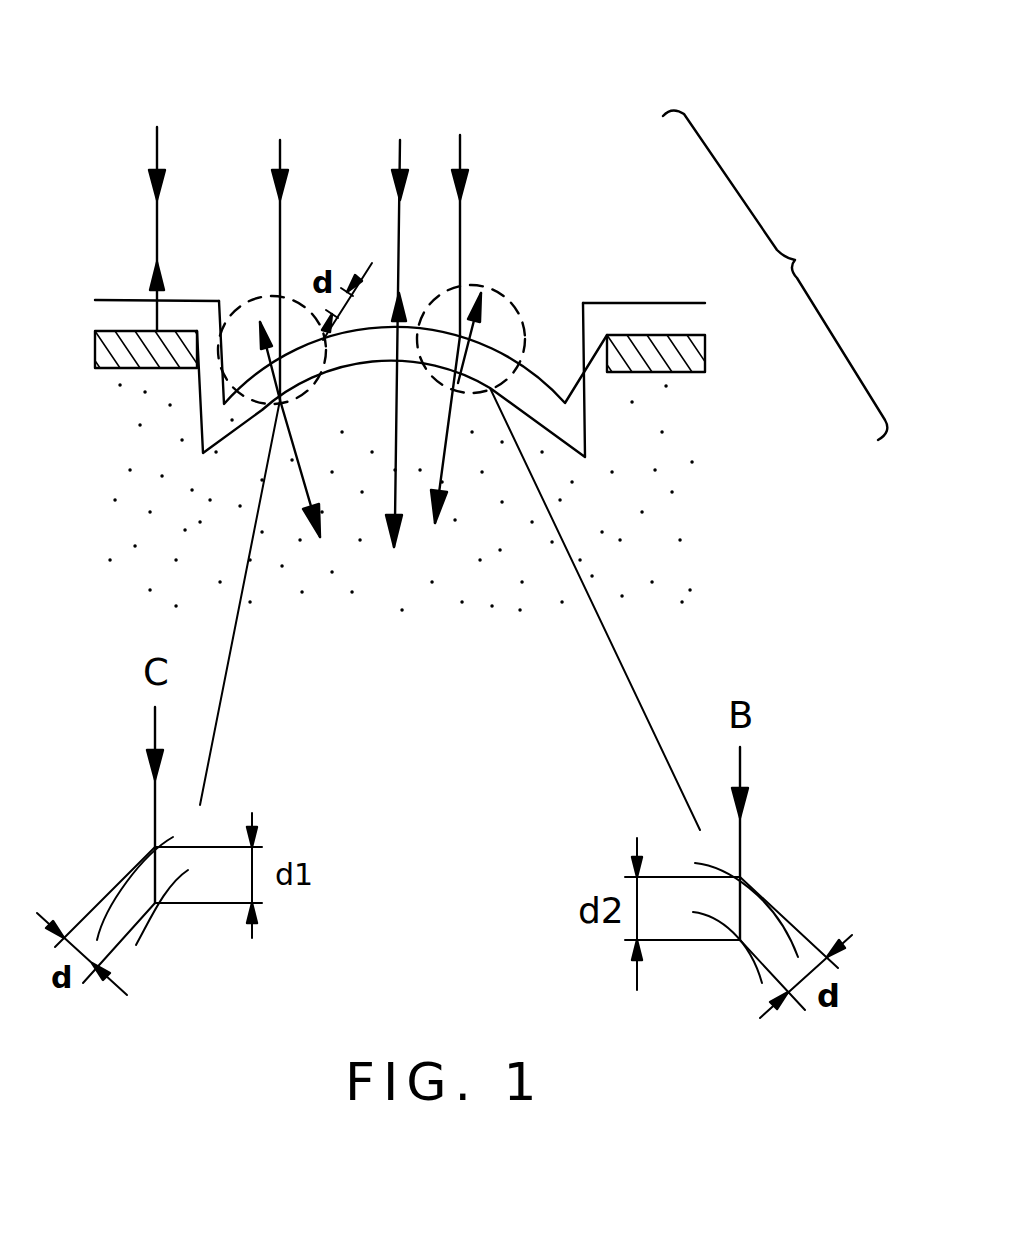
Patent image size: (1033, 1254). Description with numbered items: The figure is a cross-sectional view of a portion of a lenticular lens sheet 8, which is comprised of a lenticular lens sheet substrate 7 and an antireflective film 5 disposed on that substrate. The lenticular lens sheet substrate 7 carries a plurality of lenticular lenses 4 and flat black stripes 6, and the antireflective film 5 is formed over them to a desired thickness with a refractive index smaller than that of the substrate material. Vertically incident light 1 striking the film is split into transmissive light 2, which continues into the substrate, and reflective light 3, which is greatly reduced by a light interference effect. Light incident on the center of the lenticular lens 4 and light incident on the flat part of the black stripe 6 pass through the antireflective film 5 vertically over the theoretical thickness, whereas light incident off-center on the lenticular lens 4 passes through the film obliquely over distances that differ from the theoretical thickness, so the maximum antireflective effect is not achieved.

The vertically incident light 1 is at (503, 80).
The transmissive light 2 is at (483, 543).
The reflective light 3 is at (259, 323).
The lenticular lens 4 is at (522, 322).
The antireflective film 5 is at (618, 318).
The flat black stripe 6 is at (703, 344).
The lenticular lens sheet substrate 7 is at (652, 484).
The lenticular lens sheet 8 is at (837, 275).